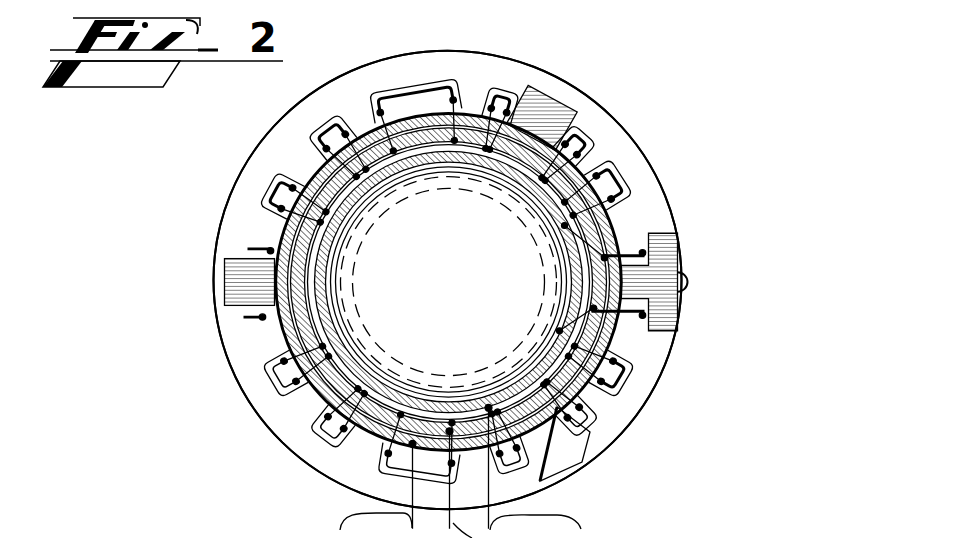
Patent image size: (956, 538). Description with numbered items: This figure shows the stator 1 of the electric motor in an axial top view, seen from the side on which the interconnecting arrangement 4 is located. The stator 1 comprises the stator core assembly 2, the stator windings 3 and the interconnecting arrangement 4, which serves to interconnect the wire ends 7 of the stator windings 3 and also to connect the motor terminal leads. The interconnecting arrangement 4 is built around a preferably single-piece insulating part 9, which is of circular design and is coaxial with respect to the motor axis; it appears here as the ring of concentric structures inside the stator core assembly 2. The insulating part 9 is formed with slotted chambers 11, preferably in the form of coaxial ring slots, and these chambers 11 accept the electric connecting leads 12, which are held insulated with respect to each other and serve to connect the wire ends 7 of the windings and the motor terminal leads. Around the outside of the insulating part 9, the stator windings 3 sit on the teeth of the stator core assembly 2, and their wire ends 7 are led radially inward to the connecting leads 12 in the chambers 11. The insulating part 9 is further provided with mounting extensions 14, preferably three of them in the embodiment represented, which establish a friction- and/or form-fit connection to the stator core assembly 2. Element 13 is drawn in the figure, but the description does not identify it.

The stator 1 is at (736, 299).
The stator core assembly 2 is at (662, 380).
The stator windings 3 is at (398, 100).
The interconnecting arrangement 4 is at (548, 246).
The wire ends 7 is at (330, 150).
The insulating part 9 is at (613, 222).
The slotted chambers 11 is at (545, 175).
The electric connecting leads 12 is at (553, 358).
The inner ring segments 13 is at (330, 300).
The mounting extension 14 is at (547, 107).